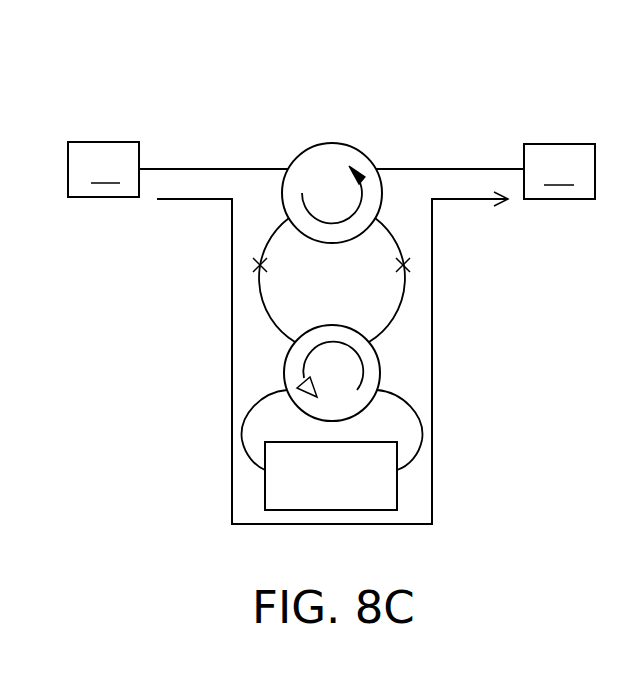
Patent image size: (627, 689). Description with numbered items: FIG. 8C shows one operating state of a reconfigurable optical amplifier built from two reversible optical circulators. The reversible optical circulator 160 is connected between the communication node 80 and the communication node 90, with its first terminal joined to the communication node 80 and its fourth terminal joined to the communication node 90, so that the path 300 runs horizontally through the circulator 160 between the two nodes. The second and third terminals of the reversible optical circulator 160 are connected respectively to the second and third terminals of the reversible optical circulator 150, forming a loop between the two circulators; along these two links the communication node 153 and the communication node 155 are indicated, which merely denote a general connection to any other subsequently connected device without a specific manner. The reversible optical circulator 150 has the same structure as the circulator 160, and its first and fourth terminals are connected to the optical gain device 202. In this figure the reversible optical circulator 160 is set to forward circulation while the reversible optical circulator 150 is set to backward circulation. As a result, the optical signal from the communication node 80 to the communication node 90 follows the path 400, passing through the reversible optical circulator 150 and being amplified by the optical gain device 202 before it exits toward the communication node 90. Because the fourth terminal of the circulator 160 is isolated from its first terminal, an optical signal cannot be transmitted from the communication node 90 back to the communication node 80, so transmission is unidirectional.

The communication node 80 is at (103, 169).
The communication node 90 is at (559, 171).
The path 300 is at (200, 168).
The reversible optical circulator 160 is at (337, 143).
The communication node 153 is at (242, 271).
The communication node 155 is at (421, 271).
The path 400 is at (432, 305).
The reversible optical circulator 150 is at (380, 358).
The optical gain device 202 is at (397, 485).